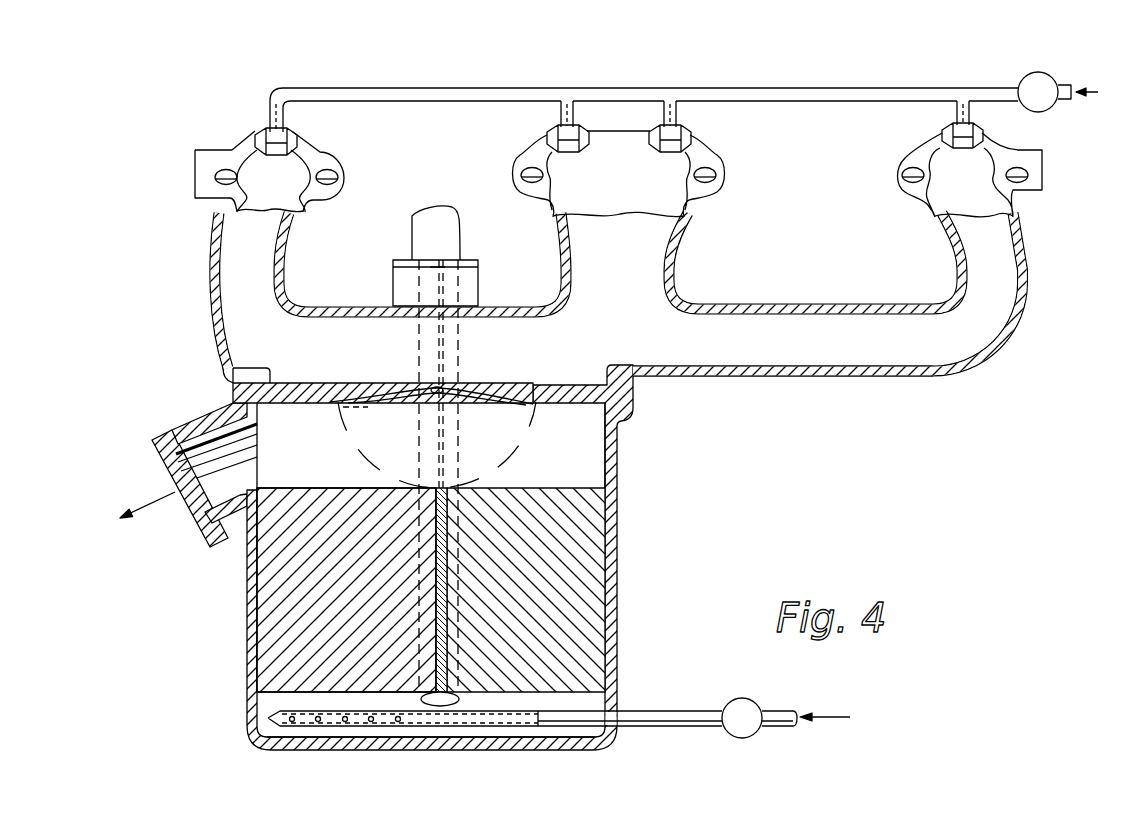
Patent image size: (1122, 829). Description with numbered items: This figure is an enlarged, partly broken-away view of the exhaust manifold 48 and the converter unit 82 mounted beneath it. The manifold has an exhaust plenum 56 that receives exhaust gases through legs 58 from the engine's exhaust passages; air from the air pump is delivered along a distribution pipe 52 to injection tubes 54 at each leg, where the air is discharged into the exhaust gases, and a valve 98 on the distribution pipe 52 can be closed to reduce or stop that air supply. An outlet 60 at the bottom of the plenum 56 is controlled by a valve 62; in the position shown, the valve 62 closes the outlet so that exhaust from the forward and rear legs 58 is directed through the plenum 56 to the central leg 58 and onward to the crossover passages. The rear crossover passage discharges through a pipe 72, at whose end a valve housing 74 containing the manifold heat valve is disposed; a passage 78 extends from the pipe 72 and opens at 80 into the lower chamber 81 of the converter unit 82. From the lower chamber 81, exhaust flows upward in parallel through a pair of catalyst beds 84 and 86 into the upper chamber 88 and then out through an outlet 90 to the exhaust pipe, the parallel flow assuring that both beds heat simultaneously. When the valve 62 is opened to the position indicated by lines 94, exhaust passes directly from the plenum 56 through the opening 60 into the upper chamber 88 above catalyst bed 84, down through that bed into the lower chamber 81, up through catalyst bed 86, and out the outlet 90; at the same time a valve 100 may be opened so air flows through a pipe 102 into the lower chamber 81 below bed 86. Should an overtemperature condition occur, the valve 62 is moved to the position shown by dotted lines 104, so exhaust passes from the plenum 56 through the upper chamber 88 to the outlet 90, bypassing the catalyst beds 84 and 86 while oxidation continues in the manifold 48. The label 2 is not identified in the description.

The stem connection 2 is at (442, 268).
The right-hand exhaust manifold 48 is at (935, 377).
The distribution pipe 52 is at (853, 85).
The injection tube 54 is at (287, 122).
The exhaust plenum 56 is at (758, 368).
The leg 58 is at (290, 252).
The outlet 60 is at (532, 395).
The valve 62 is at (477, 390).
The pipe 72 is at (452, 228).
The valve housing 74 is at (472, 280).
The passage 78 is at (457, 518).
The opening 80 is at (447, 704).
The lower chamber 81 is at (585, 702).
The converter unit 82 is at (622, 567).
The catalyst bed 84 is at (585, 531).
The catalyst bed 86 is at (280, 591).
The upper chamber 88 is at (588, 441).
The outlet 90 is at (188, 444).
The position 94 is at (445, 445).
The valve 98 is at (1047, 108).
The valve 100 is at (748, 698).
The pipe 102 is at (567, 727).
The dotted lines 104 is at (368, 408).